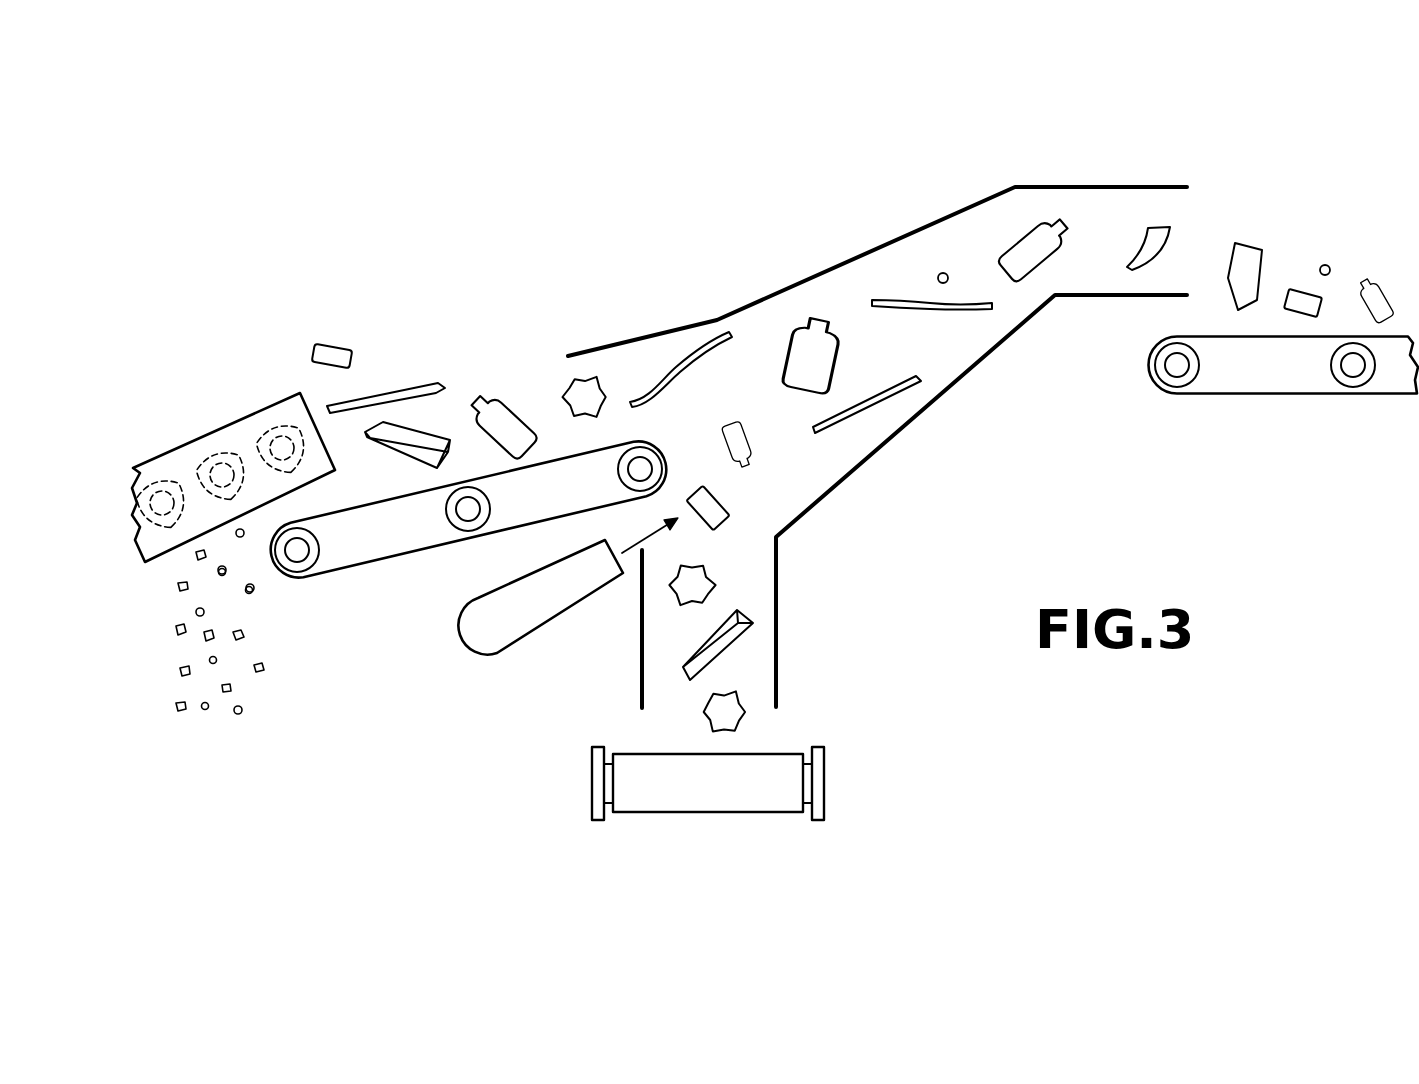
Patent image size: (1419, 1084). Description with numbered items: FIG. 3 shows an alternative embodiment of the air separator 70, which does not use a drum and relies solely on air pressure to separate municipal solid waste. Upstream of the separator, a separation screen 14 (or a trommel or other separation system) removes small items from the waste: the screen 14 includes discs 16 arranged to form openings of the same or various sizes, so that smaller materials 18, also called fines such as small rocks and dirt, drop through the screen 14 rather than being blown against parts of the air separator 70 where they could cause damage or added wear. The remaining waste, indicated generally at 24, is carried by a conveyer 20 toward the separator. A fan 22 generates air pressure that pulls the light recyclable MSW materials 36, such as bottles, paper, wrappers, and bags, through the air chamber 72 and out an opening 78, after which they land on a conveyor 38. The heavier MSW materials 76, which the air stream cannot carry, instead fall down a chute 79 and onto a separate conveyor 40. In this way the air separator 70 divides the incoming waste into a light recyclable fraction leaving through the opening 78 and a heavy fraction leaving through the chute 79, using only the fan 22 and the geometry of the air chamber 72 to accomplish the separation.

The separation screen 14 is at (212, 433).
The discs 16 is at (157, 467).
The smaller materials 18 is at (243, 634).
The conveyer 20 is at (398, 566).
The fan 22 is at (479, 652).
The material stream 24 is at (570, 322).
The light recyclable MSW materials 36 is at (793, 367).
The conveyor 38 is at (1302, 394).
The conveyor 40 is at (708, 815).
The air separator 70 is at (573, 233).
The air chamber 72 is at (830, 290).
The heavier MSW materials 76 is at (713, 578).
The opening 78 is at (1172, 204).
The chute 79 is at (661, 645).